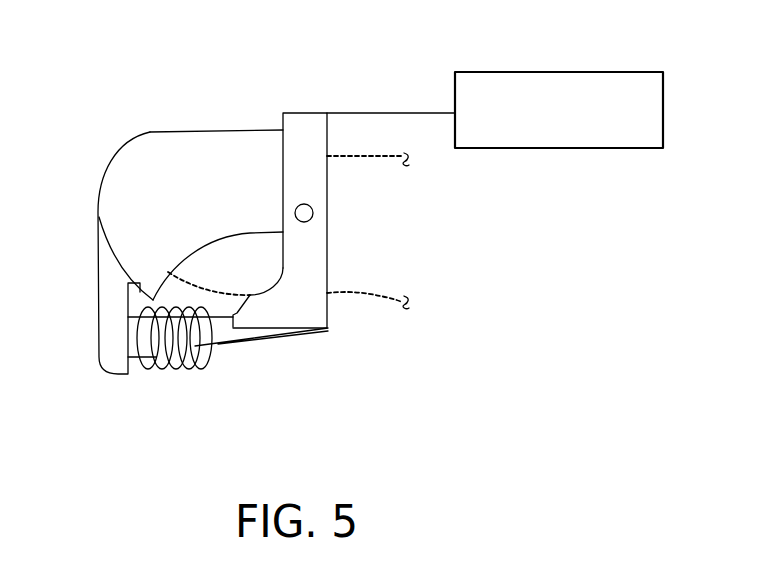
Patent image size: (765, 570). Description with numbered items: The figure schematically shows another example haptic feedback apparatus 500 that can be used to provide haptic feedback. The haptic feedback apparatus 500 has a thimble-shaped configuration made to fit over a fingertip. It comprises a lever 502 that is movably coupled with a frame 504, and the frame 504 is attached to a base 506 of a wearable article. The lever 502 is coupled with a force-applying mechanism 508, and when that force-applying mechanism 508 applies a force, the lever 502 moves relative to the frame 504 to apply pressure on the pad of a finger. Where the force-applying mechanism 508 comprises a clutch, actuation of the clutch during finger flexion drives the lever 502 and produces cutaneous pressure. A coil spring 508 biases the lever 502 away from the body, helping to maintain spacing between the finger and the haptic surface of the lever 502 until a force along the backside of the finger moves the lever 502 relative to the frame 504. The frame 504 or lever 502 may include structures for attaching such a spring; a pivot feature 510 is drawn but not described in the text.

The haptic feedback apparatus 500 is at (102, 94).
The lever 502 is at (327, 262).
The frame 504 is at (102, 163).
The base 506 is at (382, 297).
The force-applying mechanism 508 is at (177, 384).
The pivot 510 is at (307, 200).